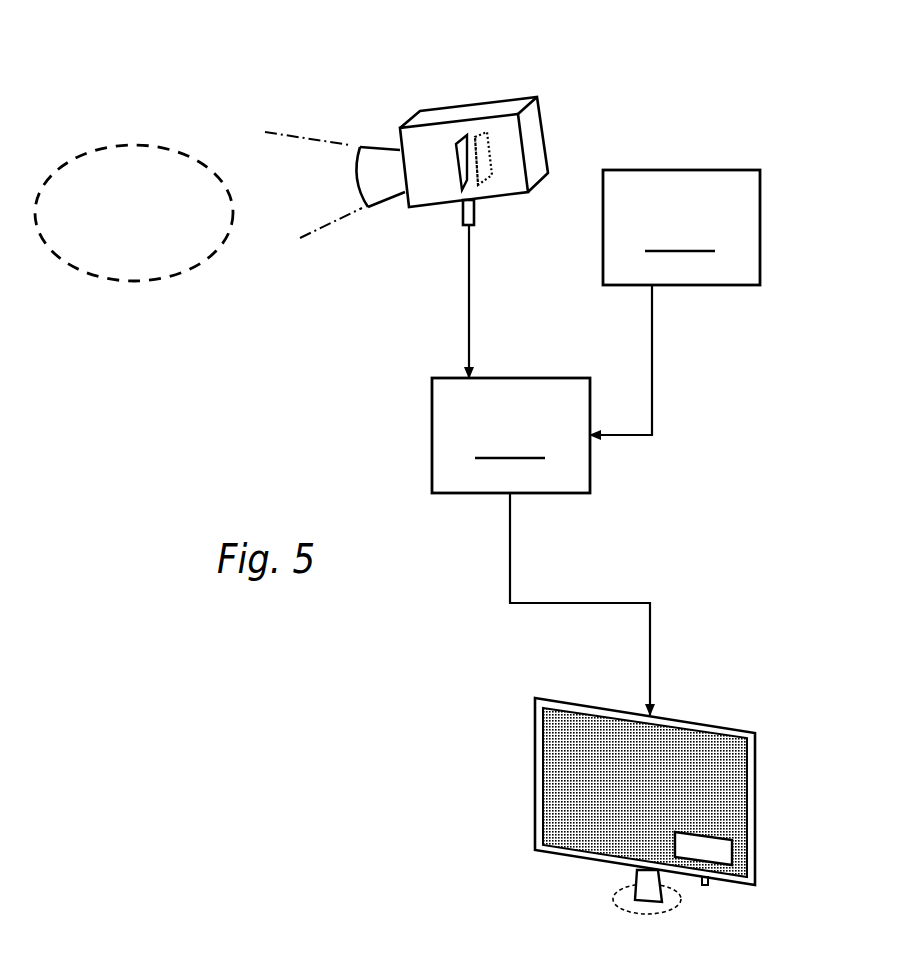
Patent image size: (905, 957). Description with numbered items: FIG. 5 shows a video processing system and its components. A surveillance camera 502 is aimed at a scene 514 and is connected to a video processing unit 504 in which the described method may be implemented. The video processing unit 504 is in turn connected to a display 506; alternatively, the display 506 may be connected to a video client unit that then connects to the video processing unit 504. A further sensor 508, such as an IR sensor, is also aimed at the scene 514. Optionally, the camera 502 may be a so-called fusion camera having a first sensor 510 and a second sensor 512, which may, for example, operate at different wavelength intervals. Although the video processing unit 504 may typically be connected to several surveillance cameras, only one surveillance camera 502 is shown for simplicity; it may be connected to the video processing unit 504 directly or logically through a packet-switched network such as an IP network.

The surveillance camera 502 is at (547, 138).
The video processing unit 504 is at (541, 546).
The display 506 is at (568, 810).
The further sensor 508 is at (675, 302).
The first sensor 510 is at (456, 145).
The second sensor 512 is at (485, 140).
The scene 514 is at (180, 153).